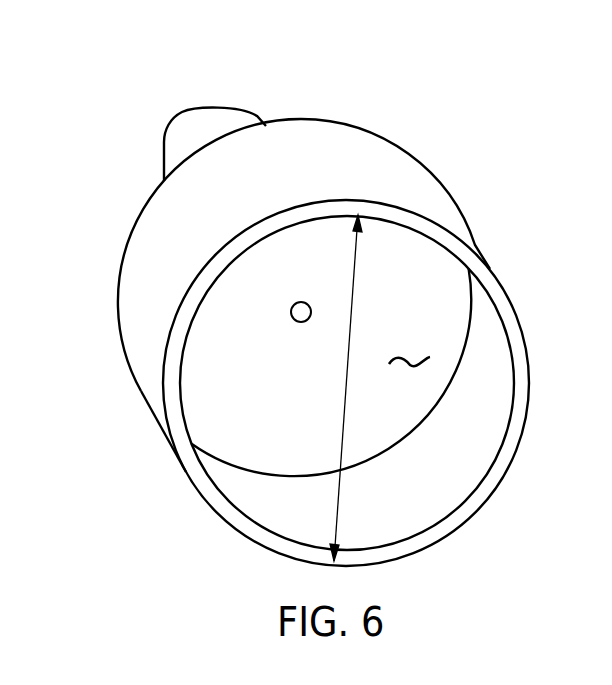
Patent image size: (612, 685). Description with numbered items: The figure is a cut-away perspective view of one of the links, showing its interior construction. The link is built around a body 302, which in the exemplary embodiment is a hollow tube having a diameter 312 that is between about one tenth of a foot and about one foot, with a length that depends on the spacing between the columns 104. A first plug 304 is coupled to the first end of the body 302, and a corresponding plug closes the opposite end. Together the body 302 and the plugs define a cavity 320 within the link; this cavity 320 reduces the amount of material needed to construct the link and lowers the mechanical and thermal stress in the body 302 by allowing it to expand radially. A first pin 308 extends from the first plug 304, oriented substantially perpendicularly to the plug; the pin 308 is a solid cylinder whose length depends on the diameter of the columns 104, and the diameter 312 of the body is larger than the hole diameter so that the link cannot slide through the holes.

The container cup assembly 104 is at (168, 70).
The sidewall body 302 is at (163, 240).
The bottom wall 304 is at (267, 385).
The handle tab 308 is at (172, 117).
The inner diameter 312 is at (339, 433).
The marking 320 is at (404, 358).